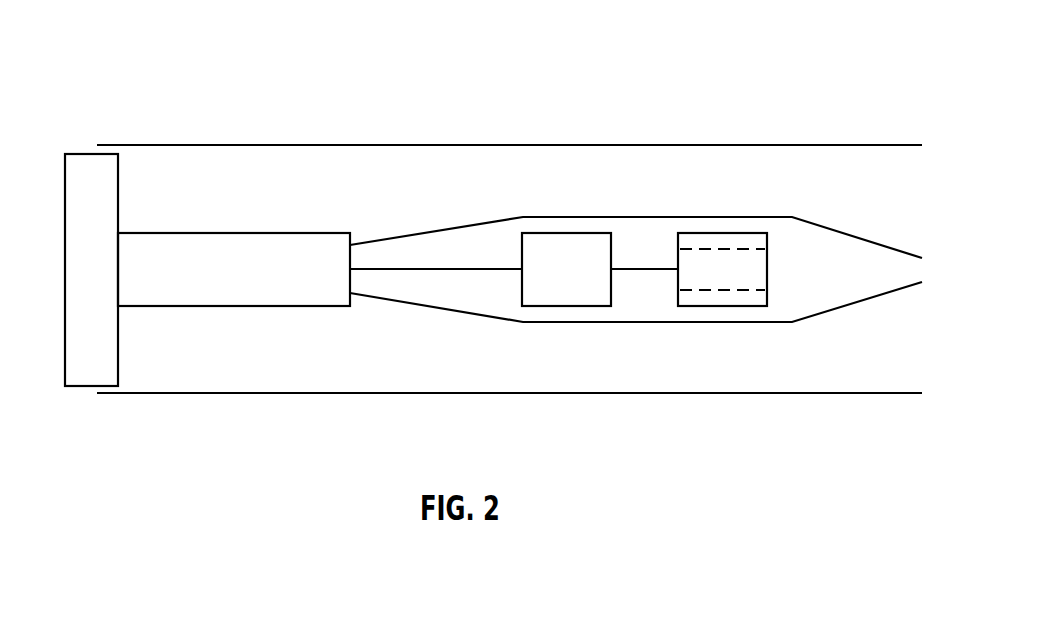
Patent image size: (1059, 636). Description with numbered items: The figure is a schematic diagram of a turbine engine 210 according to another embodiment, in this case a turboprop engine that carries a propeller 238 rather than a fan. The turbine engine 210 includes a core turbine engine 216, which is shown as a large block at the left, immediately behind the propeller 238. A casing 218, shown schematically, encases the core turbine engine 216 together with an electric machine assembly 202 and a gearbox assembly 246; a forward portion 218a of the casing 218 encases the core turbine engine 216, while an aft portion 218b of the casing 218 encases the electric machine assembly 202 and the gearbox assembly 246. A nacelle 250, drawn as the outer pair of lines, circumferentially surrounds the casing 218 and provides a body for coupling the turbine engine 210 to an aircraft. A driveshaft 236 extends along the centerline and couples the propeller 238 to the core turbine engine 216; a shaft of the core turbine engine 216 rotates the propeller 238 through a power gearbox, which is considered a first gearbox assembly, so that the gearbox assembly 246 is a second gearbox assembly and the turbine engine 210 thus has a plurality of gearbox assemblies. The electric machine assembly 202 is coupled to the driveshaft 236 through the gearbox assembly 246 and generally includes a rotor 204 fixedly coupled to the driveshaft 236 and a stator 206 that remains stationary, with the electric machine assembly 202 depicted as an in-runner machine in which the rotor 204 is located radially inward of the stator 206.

The turbine engine 210 is at (158, 70).
The nacelle 250 is at (505, 145).
The propeller 238 is at (65, 303).
The core turbine engine 216 is at (228, 208).
The casing 218 is at (411, 198).
The forward portion of the casing 218a is at (297, 233).
The aft portion of the casing 218b is at (445, 310).
The driveshaft 236 is at (400, 270).
The gearbox assembly 246 is at (570, 233).
The electric machine assembly 202 is at (728, 233).
The rotor 204 is at (767, 269).
The stator 206 is at (762, 298).